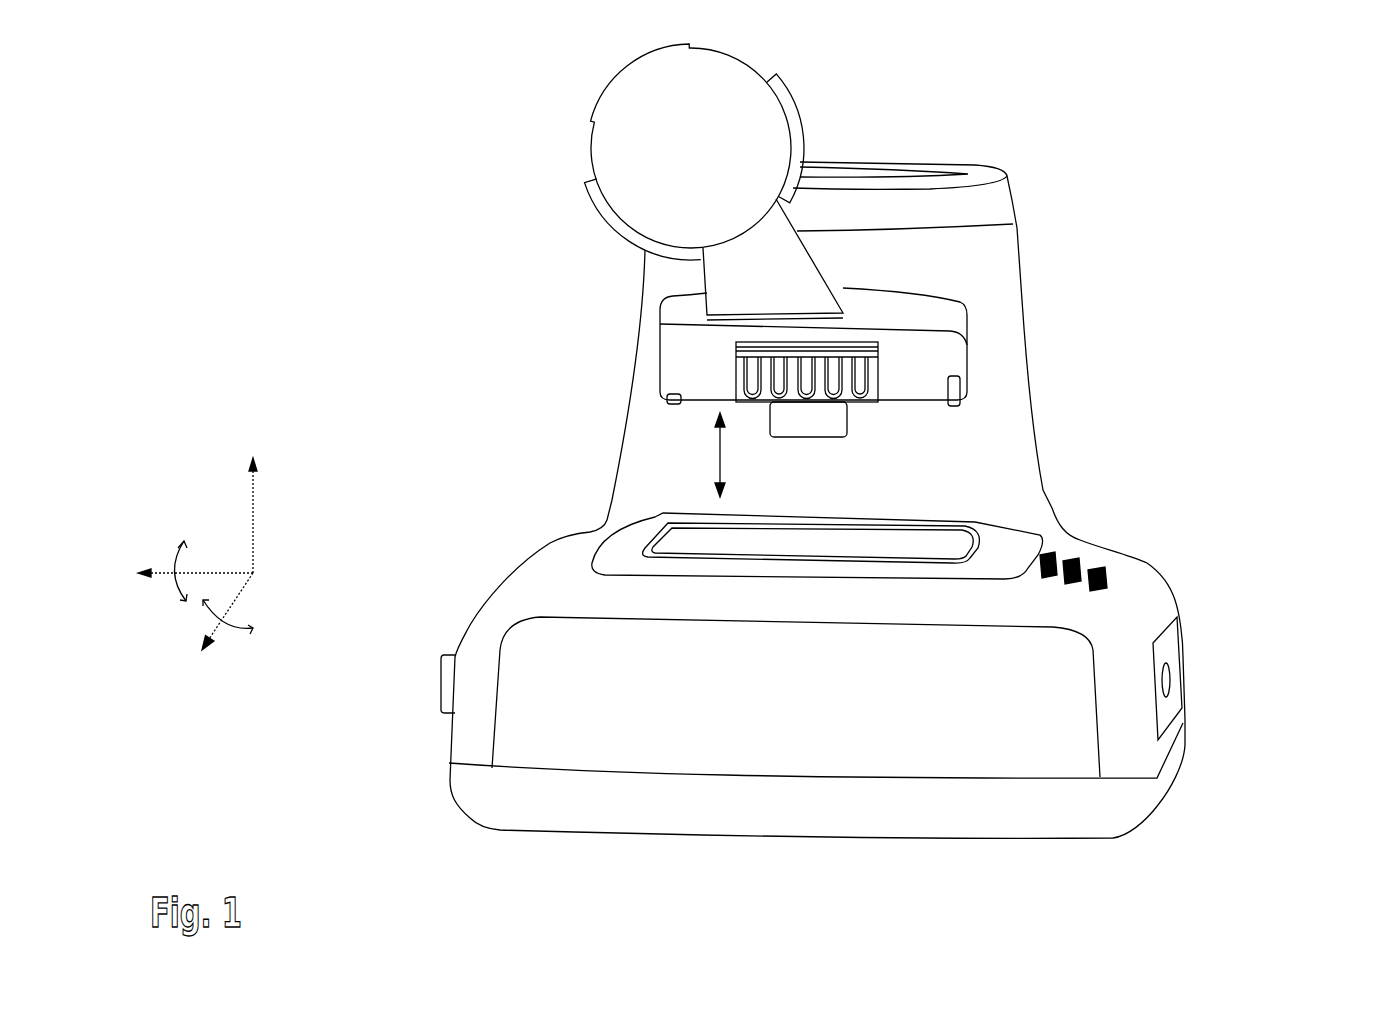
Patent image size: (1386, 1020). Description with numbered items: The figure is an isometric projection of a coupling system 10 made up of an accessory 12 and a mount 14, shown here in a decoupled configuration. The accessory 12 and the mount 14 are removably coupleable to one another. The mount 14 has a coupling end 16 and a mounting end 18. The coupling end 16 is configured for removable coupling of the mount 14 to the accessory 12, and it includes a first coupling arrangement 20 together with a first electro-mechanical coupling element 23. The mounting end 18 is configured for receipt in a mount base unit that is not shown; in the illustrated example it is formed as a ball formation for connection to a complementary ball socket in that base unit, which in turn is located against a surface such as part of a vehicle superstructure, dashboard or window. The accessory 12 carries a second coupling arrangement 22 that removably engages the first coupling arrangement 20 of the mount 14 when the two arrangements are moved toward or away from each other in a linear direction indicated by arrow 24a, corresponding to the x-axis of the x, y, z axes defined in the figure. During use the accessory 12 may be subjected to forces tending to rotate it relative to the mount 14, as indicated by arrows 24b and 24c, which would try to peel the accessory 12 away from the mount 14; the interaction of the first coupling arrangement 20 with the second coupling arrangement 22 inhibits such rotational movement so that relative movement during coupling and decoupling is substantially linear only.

The coupling system 10 is at (241, 44).
The accessory 12 is at (1098, 455).
The mount 14 is at (893, 248).
The coupling end 16 is at (923, 350).
The mounting end 18 is at (637, 192).
The first coupling arrangement 20 is at (645, 362).
The second coupling arrangement 22 is at (893, 540).
The first electro-mechanical coupling element 23 is at (848, 403).
The arrow indicating linear direction 24a is at (718, 447).
The arrow indicating rotation 24b is at (255, 628).
The arrow indicating rotation 24c is at (191, 557).